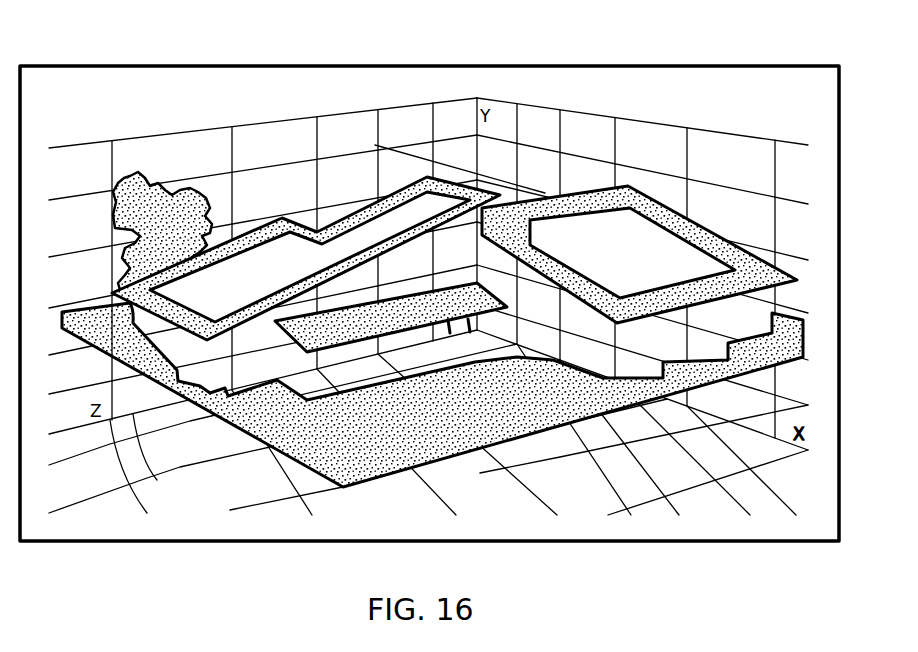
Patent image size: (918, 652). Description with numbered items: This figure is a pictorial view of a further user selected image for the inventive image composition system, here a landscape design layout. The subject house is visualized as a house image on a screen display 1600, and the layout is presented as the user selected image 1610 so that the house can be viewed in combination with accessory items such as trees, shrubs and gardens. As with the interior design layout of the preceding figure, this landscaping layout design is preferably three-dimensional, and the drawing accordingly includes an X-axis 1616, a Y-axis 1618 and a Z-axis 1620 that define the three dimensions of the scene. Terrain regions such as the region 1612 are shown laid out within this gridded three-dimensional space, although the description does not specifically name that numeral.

The screen display 1600 is at (150, 107).
The user selected image 1610 is at (700, 107).
The terrain region 1612 is at (696, 221).
The X-axis 1616 is at (753, 430).
The Y-axis 1618 is at (473, 118).
The Z-axis 1620 is at (157, 480).